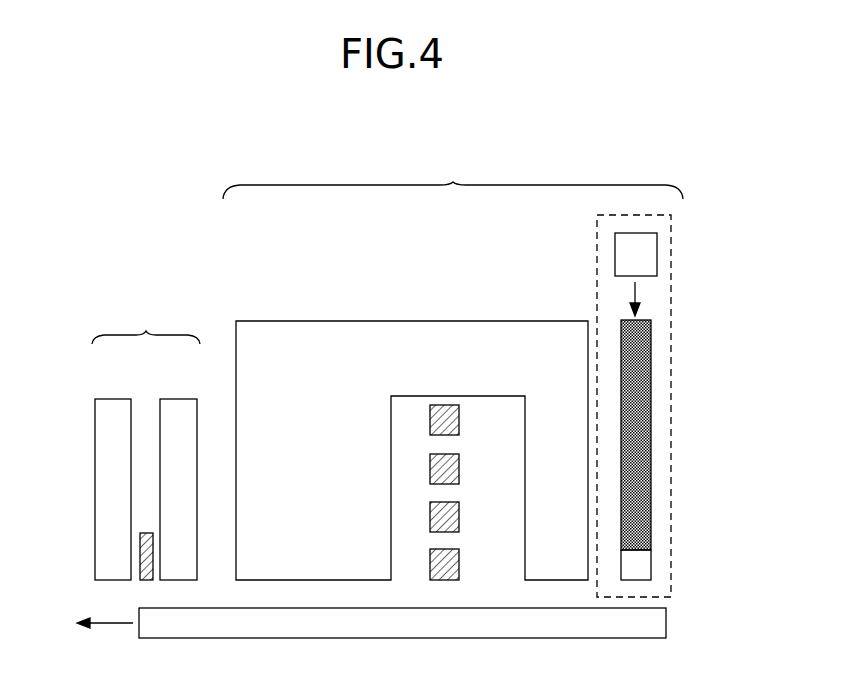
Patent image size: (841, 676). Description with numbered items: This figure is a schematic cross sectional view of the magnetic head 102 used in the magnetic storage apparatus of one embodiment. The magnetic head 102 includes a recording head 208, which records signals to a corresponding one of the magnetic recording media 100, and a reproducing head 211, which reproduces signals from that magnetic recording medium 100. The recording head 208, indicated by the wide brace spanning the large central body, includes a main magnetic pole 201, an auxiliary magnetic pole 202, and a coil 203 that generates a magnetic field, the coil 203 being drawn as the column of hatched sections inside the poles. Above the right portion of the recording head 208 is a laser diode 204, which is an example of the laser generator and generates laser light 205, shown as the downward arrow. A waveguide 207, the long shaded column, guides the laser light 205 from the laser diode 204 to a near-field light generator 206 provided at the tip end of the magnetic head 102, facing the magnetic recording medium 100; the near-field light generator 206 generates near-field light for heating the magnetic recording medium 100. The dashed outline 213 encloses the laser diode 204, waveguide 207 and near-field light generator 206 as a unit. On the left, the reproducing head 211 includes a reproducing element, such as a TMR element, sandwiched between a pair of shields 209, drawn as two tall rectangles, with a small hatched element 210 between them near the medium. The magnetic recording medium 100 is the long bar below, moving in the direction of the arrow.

The magnetic head 102 is at (750, 129).
The magnetic recording medium 100 is at (635, 625).
The main magnetic pole 201 is at (573, 524).
The auxiliary magnetic pole 202 is at (355, 456).
The coil 203 is at (447, 421).
The laser diode 204 is at (650, 251).
The laser light 205 is at (650, 297).
The near-field light generator 206 is at (635, 568).
The waveguide 207 is at (640, 386).
The recording head 208 is at (453, 177).
The shields 209 is at (179, 409).
The gas supply unit 210 is at (140, 558).
The reproducing head 211 is at (146, 323).
The coating material supply section 213 is at (671, 238).